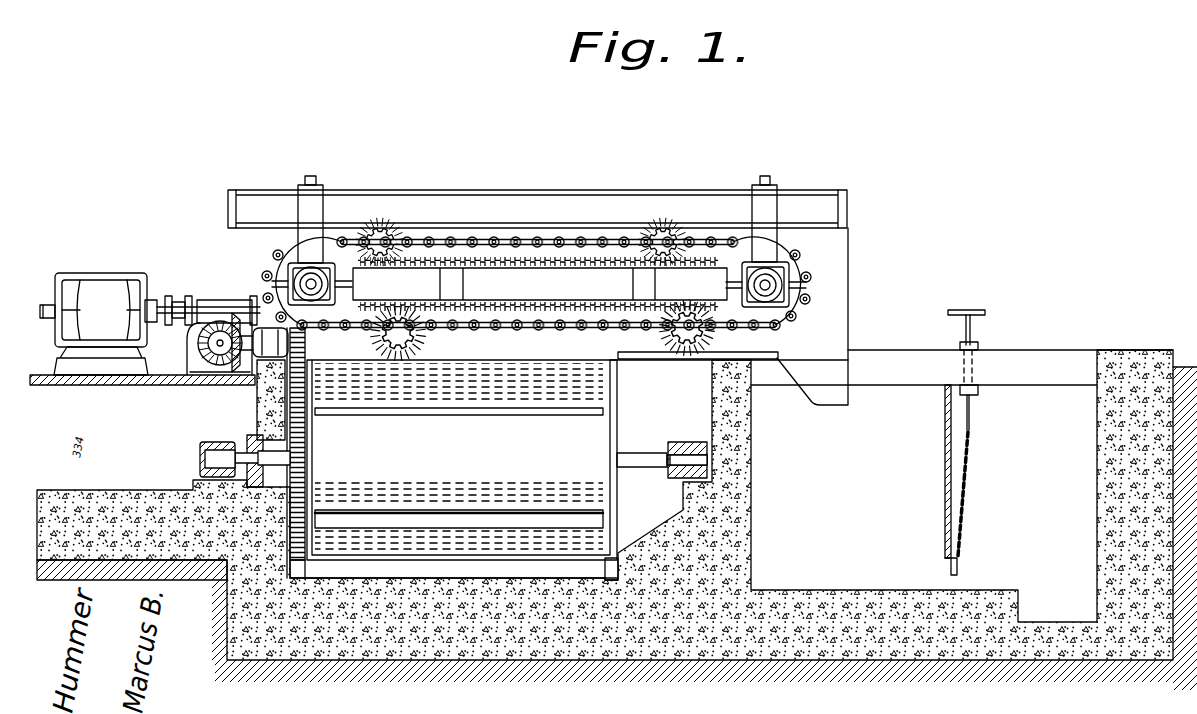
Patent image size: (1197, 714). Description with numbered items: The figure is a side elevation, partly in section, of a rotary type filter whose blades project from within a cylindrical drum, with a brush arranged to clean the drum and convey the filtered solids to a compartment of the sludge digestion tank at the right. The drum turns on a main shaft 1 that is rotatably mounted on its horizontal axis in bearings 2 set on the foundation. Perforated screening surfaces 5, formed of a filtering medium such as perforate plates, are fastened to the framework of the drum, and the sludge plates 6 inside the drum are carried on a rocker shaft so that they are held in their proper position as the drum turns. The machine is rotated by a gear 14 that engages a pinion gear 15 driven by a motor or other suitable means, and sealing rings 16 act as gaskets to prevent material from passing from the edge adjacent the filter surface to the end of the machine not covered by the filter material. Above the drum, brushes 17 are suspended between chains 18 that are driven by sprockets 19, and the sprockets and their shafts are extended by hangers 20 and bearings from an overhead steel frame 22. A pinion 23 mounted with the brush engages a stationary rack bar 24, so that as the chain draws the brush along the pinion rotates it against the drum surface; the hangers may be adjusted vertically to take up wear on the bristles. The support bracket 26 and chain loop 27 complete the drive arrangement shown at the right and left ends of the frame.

The main shaft 1 is at (243, 453).
The bearings 2 is at (200, 463).
The perforated screening surfaces 5 is at (524, 357).
The sludge plates 6 is at (413, 408).
The gear 14 is at (293, 398).
The pinion gear 15 is at (305, 345).
The rings 16 is at (310, 572).
The brushes 17 is at (663, 226).
The chains 18 is at (578, 240).
The sprockets 19 is at (352, 290).
The hangers 20 is at (312, 217).
The steel frame 22 is at (537, 209).
The pinion 23 is at (426, 343).
The rack bar 24 is at (538, 284).
The bracket 26 is at (780, 357).
The chain 27 is at (290, 267).